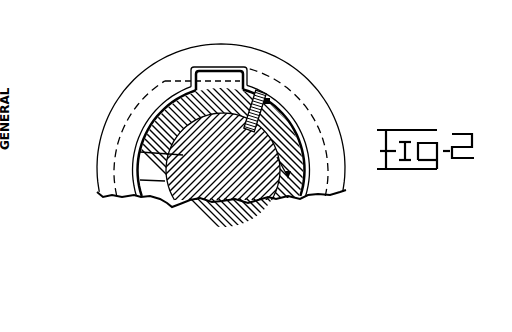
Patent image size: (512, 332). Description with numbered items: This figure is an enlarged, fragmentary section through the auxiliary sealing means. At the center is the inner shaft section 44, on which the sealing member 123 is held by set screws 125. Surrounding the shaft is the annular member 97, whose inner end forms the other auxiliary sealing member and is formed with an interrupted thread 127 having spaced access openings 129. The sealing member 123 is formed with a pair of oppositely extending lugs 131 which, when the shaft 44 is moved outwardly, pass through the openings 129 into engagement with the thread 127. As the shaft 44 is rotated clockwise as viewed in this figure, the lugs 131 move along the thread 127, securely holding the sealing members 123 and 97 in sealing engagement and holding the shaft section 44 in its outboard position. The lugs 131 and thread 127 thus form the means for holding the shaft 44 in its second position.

The inner shaft section 44 is at (145, 128).
The annular member 97 is at (280, 60).
The sealing member 123 is at (140, 163).
The set screws 125 is at (267, 102).
The interrupted thread 127 is at (314, 116).
The access openings 129 is at (240, 67).
The lugs 131 is at (199, 68).